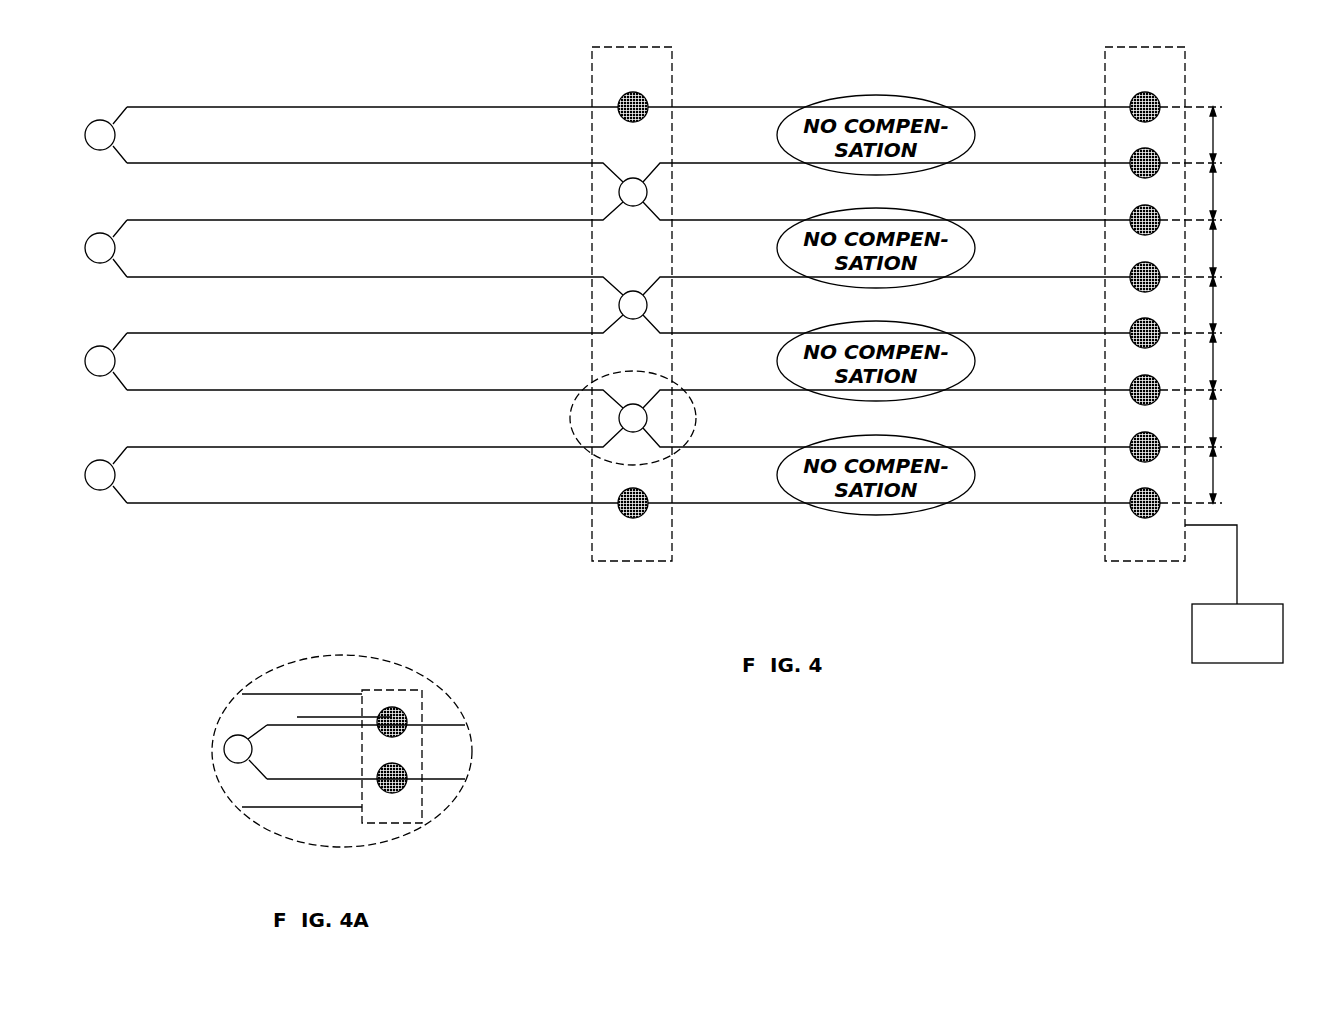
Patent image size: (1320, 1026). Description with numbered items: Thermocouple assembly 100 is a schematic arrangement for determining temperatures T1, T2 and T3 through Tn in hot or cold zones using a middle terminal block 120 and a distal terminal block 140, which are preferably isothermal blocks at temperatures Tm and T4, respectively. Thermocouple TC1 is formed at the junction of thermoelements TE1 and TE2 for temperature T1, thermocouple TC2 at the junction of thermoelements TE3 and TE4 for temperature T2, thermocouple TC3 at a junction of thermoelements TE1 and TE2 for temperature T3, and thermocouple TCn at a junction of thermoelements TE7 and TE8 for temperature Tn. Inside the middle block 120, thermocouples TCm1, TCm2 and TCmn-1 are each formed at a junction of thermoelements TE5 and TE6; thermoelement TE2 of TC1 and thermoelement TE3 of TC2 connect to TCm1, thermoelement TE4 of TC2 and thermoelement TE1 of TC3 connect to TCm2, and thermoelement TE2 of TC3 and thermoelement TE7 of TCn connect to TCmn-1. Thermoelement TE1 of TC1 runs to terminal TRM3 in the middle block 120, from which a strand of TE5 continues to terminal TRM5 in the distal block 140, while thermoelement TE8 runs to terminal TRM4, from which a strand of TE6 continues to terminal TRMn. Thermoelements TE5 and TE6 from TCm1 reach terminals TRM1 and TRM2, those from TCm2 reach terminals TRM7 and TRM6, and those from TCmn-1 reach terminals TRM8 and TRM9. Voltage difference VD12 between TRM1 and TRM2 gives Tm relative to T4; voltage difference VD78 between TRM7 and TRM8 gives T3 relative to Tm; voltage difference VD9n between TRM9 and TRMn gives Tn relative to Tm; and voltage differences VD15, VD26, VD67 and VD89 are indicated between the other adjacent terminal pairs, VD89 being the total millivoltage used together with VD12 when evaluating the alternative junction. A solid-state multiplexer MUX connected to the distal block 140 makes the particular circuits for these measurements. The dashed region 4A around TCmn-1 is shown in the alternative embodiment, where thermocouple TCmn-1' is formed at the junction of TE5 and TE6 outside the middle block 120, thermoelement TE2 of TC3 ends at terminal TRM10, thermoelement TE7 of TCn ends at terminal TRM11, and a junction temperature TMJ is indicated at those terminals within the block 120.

In FIG. 4, the thermocouple assembly 100 is at (143, 58).
In FIG. 4, the middle terminal block 120 is at (657, 562).
In FIG. 4A, the middle terminal block 120 is at (413, 825).
In FIG. 4, the distal terminal block 140 is at (1117, 562).
In FIG. 4, the detail region of FIG. 4A is at (571, 420).
In FIG. 4, the temperature T1 is at (89, 125).
In FIG. 4, the temperature T2 is at (89, 238).
In FIG. 4, the temperature T3 is at (89, 351).
In FIG. 4, the temperature Tn is at (89, 465).
In FIG. 4, the thermocouple TC1 is at (139, 135).
In FIG. 4, the thermocouple TC2 is at (139, 248).
In FIG. 4, the thermocouple TC3 is at (139, 361).
In FIG. 4, the thermocouple TCn is at (140, 475).
In FIG. 4, the thermoelement TE1 is at (285, 107).
In FIG. 4, the thermoelement TE2 is at (285, 163).
In FIG. 4A, the thermoelement TE2 is at (290, 693).
In FIG. 4, the thermoelement TE3 is at (285, 220).
In FIG. 4, the thermoelement TE4 is at (285, 277).
In FIG. 4, the thermoelement TE5 is at (680, 107).
In FIG. 4A, the thermoelement TE5 is at (273, 718).
In FIG. 4, the thermoelement TE6 is at (727, 220).
In FIG. 4A, the thermoelement TE6 is at (258, 773).
In FIG. 4, the thermoelement TE7 is at (285, 447).
In FIG. 4A, the thermoelement TE7 is at (282, 810).
In FIG. 4, the thermoelement TE8 is at (285, 503).
In FIG. 4, the terminal TRM1 is at (1132, 154).
In FIG. 4, the terminal TRM2 is at (1132, 211).
In FIG. 4, the terminal TRM3 is at (620, 97).
In FIG. 4, the terminal TRM4 is at (645, 513).
In FIG. 4, the terminal TRM5 is at (1132, 98).
In FIG. 4, the terminal TRM6 is at (1132, 268).
In FIG. 4, the terminal TRM7 is at (1132, 324).
In FIG. 4, the terminal TRM8 is at (1132, 381).
In FIG. 4, the terminal TRM9 is at (1132, 438).
In FIG. 4, the terminal TRMn is at (1135, 514).
In FIG. 4A, the terminal TRM10 is at (400, 708).
In FIG. 4A, the terminal TRM11 is at (402, 790).
In FIG. 4, the thermocouple TCm1 is at (647, 192).
In FIG. 4, the thermocouple TCm2 is at (647, 305).
In FIG. 4, the thermocouple TCmn-1 is at (693, 418).
In FIG. 4A, the thermocouple TCmn-1' is at (158, 755).
In FIG. 4, the temperature Tm is at (632, 304).
In FIG. 4, the temperature T4 is at (1145, 304).
In FIG. 4A, the measurement junction temperature TMJ is at (388, 790).
In FIG. 4, the voltage difference TRM5-TRM1 VD15 is at (1258, 136).
In FIG. 4, the voltage difference VD12 is at (1258, 193).
In FIG. 4, the voltage difference TRM2-TRM6 VD26 is at (1258, 249).
In FIG. 4, the voltage difference TRM6-TRM7 VD67 is at (1258, 306).
In FIG. 4, the voltage difference VD78 is at (1258, 362).
In FIG. 4, the voltage difference VD89 is at (1258, 419).
In FIG. 4, the voltage difference VD9n is at (1258, 475).
In FIG. 4, the solid-state multiplexer MUX is at (1234, 594).